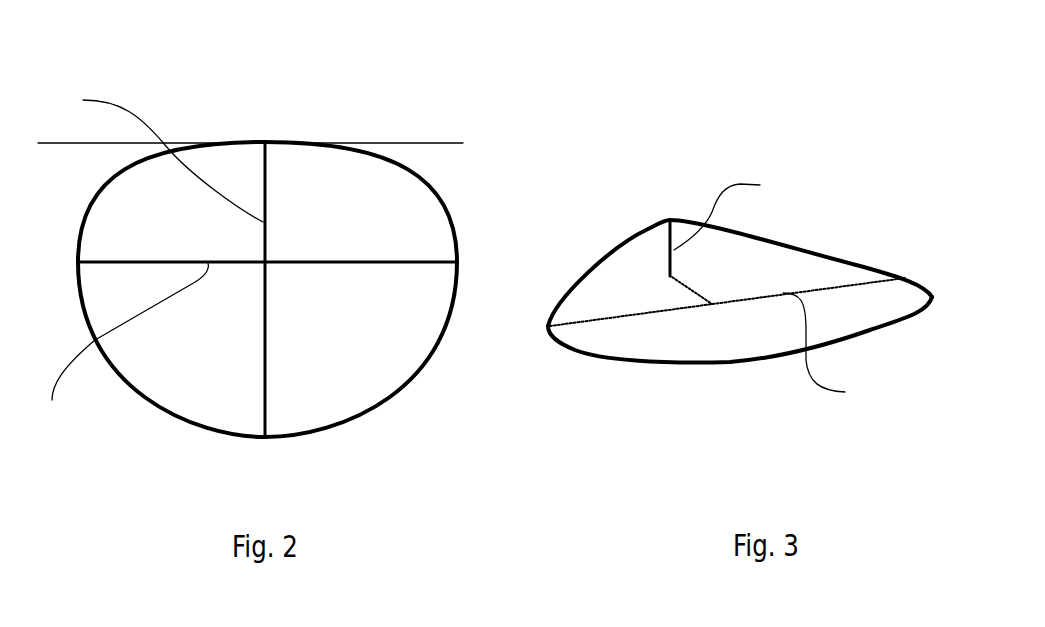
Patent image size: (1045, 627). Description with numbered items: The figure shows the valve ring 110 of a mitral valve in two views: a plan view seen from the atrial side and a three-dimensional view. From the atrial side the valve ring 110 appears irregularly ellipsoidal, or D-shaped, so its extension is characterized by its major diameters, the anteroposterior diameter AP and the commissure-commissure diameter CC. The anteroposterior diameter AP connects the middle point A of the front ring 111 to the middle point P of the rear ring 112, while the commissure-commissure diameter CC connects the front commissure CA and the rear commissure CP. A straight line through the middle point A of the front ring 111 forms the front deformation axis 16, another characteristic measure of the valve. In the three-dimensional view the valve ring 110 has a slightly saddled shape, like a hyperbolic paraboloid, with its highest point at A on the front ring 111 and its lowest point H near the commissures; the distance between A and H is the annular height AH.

In FIG. 2, the valve ring 110 is at (264, 287).
In FIG. 3, the valve ring 110 is at (731, 301).
In FIG. 2, the front ring 111 is at (248, 141).
In FIG. 3, the front ring 111 is at (638, 228).
In FIG. 2, the rear ring 112 is at (367, 418).
In FIG. 3, the rear ring 112 is at (723, 363).
In FIG. 2, the front deformation axis 16 is at (432, 142).